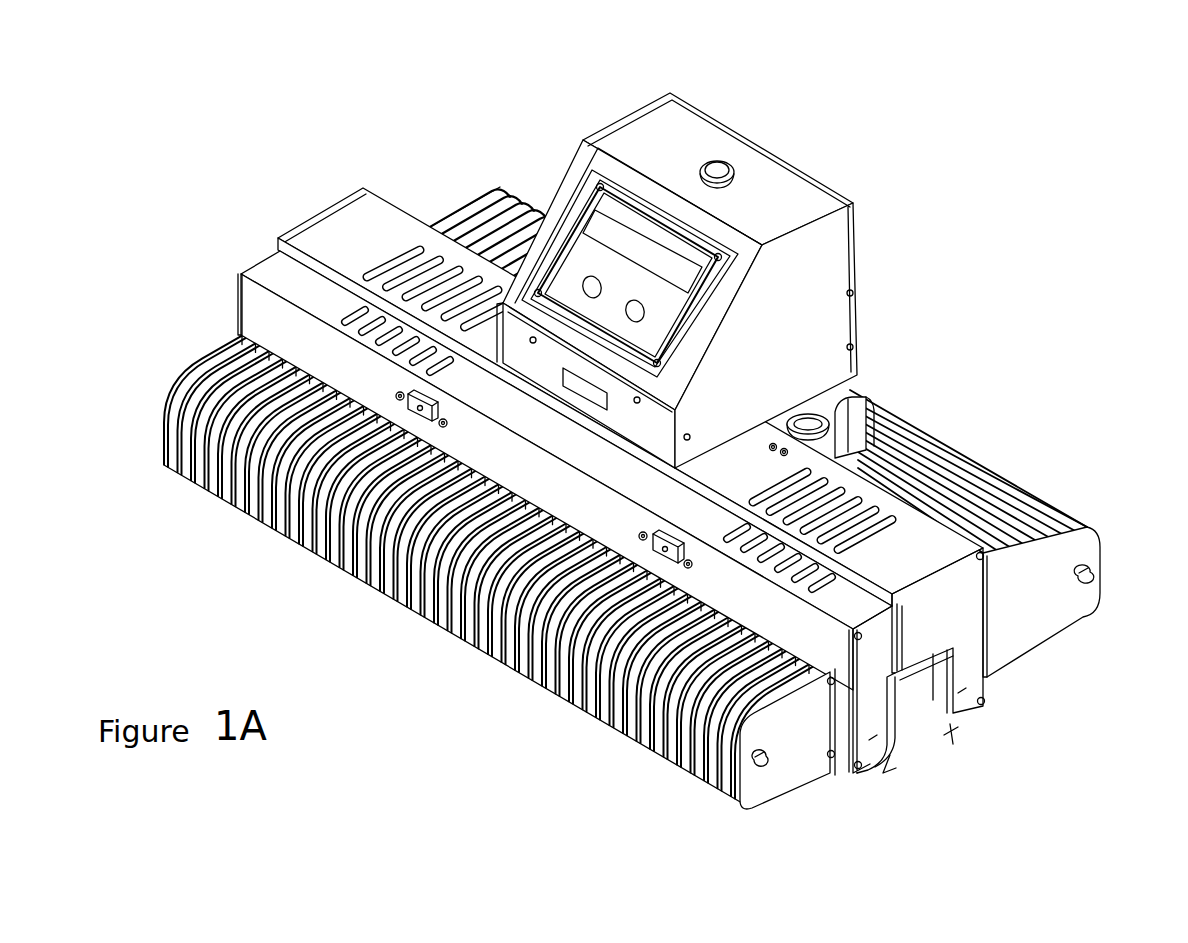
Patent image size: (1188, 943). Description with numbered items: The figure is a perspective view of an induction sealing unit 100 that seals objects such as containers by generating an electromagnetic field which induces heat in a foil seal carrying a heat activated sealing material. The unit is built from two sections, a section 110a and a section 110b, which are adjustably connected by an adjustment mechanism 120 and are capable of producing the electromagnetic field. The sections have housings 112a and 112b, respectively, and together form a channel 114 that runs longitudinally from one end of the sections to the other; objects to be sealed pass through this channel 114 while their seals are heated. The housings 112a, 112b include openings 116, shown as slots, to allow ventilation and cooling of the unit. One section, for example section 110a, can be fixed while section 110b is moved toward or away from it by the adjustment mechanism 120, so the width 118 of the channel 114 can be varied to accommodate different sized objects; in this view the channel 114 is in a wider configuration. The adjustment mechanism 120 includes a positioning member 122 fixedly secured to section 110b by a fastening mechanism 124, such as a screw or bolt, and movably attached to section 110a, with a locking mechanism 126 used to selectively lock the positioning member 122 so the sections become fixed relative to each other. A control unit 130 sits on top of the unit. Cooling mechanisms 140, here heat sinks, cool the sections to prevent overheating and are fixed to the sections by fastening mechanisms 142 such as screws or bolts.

The induction sealing unit 100 is at (614, 448).
The section 110a is at (594, 336).
The section 110b is at (489, 426).
The housing 112a is at (630, 330).
The housing 112b is at (265, 277).
The channel 114 is at (938, 778).
The openings 116 is at (408, 238).
The width 118 is at (908, 753).
The adjustment mechanism 120 is at (952, 552).
The positioning member 122 is at (850, 427).
The fastening mechanism 124 is at (637, 530).
The locking mechanism 126 is at (808, 423).
The control unit 130 is at (557, 160).
The cooling mechanisms 140 is at (1053, 493).
The fastening mechanisms 142 is at (823, 777).